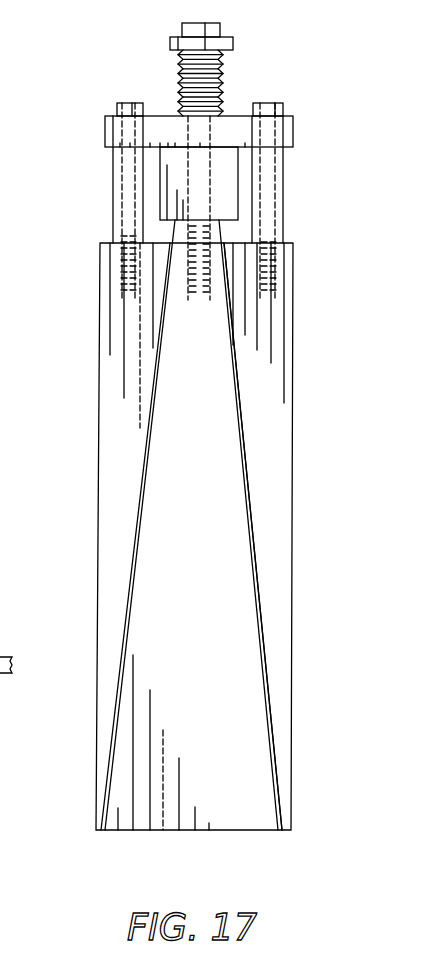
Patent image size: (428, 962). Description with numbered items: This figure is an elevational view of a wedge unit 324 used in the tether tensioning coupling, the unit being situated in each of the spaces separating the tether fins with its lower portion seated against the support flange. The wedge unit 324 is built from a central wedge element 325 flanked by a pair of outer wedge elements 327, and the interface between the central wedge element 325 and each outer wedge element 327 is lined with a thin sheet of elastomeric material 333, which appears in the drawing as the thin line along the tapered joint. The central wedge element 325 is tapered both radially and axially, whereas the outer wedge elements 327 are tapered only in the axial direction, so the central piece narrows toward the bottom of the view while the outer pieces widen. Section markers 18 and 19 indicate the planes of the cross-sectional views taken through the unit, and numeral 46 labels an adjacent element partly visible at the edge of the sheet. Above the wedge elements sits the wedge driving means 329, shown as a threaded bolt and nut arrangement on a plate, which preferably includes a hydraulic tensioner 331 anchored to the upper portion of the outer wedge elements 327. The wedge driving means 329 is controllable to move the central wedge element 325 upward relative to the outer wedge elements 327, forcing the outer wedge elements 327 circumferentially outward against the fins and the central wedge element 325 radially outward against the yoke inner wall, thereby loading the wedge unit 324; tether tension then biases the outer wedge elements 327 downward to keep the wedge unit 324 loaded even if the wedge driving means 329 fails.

The wedge unit 324 is at (78, 190).
The central wedge element 325 is at (217, 477).
The outer wedge element 327 is at (143, 477).
The wedge driving means 329 is at (235, 114).
The hydraulic tensioner 331 is at (232, 192).
The thin sheet of elastomeric material 333 is at (266, 656).
The section line 18- 18 is at (72, 268).
The section line 19- 19 is at (77, 532).
The adjacent element 46 is at (11, 634).